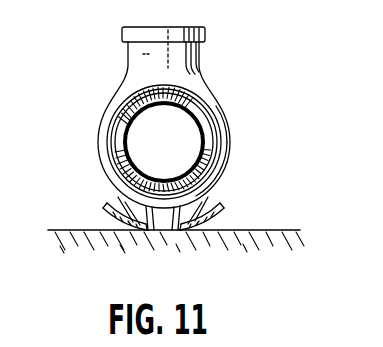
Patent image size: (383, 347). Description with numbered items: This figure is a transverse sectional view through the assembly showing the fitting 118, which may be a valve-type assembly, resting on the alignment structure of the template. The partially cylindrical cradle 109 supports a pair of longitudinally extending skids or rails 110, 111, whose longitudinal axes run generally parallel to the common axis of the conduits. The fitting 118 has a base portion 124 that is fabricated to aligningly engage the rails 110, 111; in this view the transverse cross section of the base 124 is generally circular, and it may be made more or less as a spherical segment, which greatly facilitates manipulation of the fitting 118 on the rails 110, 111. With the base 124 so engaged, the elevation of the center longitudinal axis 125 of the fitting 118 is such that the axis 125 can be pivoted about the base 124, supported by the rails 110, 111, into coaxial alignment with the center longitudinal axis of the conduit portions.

The fitting 118 is at (113, 96).
The center longitudinal axis 125 is at (165, 141).
The base portion 124 is at (208, 200).
The cradle 109 is at (225, 208).
The skid or rail 110 is at (153, 232).
The skid or rail 111 is at (176, 232).